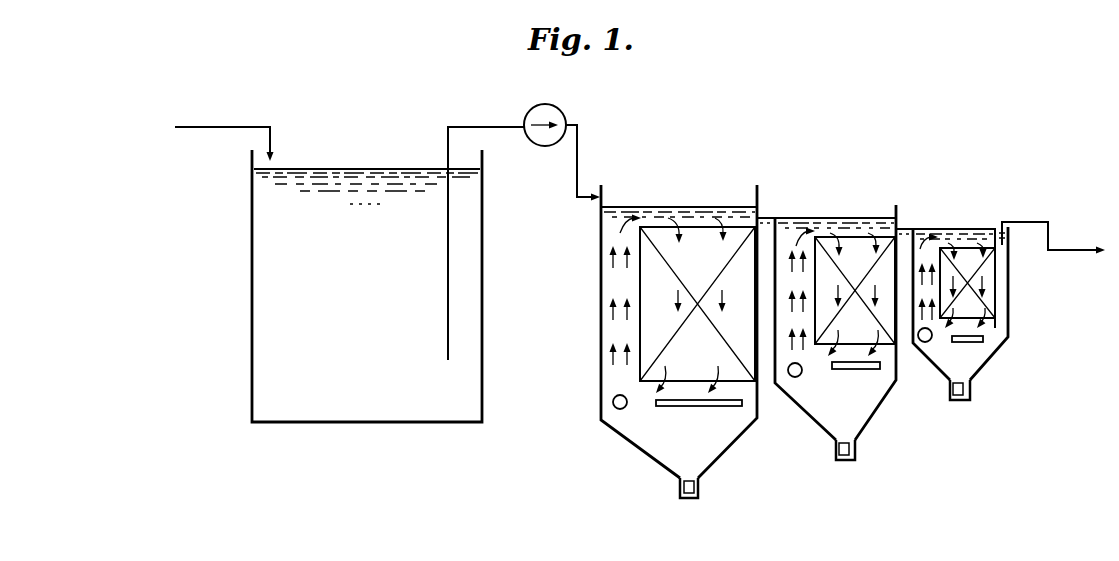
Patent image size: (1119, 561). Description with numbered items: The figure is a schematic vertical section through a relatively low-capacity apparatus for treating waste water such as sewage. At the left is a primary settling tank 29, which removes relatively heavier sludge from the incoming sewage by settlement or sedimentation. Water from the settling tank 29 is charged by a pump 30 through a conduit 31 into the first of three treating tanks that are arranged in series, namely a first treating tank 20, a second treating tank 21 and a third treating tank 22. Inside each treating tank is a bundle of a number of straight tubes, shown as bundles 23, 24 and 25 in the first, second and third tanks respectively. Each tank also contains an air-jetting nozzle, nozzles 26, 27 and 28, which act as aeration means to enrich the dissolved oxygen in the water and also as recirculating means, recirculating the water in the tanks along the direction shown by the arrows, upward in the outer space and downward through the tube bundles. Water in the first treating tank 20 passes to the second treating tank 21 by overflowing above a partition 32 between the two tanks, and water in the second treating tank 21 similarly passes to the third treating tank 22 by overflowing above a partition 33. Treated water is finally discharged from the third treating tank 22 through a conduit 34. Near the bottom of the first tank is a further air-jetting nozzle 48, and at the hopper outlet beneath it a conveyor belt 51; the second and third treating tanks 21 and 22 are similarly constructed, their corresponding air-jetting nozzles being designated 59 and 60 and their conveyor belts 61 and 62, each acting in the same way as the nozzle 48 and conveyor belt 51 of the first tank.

The first treating tank 20 is at (596, 323).
The second treating tank 21 is at (890, 393).
The third treating tank 22 is at (1010, 325).
The bundle of straight tubes 23 is at (656, 287).
The bundle of straight tubes 24 is at (857, 258).
The bundle of straight tubes 25 is at (968, 262).
The air-jetting nozzle 26 is at (618, 410).
The air-jetting nozzle 27 is at (795, 378).
The air-jetting nozzle 28 is at (925, 342).
The primary settling tank 29 is at (252, 300).
The pump 30 is at (562, 112).
The conduit 31 is at (495, 127).
The partition 32 is at (778, 253).
The partition 33 is at (917, 256).
The conduit 34 is at (1070, 250).
The air-jetting nozzle 48 is at (705, 408).
The conveyor belt 51 is at (688, 485).
The air-jetting nozzle 59 is at (858, 372).
The air-jetting nozzle 60 is at (972, 343).
The conveyor belt 61 is at (840, 447).
The conveyor belt 62 is at (970, 390).